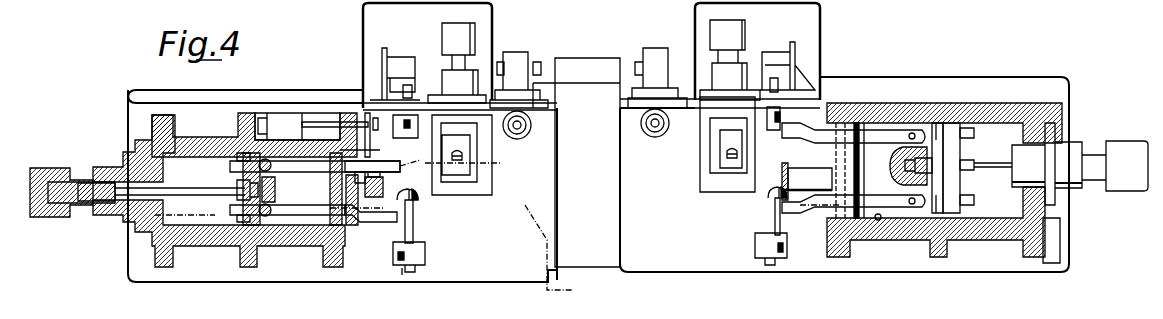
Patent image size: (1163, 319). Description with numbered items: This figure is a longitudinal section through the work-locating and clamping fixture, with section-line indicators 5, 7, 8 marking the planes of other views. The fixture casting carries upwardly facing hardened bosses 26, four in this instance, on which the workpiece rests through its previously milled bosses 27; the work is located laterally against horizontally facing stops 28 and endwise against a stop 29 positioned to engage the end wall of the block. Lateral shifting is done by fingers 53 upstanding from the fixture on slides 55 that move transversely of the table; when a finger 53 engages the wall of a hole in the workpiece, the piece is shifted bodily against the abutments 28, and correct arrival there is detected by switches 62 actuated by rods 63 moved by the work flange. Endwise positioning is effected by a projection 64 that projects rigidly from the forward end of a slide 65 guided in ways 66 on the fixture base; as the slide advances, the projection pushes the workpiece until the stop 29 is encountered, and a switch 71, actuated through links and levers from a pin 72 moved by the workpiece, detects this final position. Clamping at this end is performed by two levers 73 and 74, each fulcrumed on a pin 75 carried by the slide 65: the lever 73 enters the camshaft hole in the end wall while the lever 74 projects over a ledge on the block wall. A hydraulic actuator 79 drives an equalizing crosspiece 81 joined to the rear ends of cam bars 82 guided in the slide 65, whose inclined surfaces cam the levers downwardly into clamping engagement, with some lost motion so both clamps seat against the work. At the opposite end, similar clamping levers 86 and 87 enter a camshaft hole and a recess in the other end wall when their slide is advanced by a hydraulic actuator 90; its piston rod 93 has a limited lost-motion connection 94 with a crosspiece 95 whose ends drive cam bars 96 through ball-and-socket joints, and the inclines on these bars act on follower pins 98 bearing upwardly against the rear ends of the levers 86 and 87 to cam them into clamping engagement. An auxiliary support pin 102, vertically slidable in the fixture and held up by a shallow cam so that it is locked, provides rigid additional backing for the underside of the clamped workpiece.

The section line 5- 5 is at (182, 218).
The section line 7- 7 is at (456, 90).
The section line 8- 8 is at (507, 33).
The hardened bosses 26 is at (426, 257).
The milled bosses 27 is at (397, 256).
The horizontally facing stops 28 is at (402, 275).
The stop 29 is at (385, 183).
The fingers 53 is at (464, 155).
The slides 55 is at (482, 188).
The switches 62 is at (400, 60).
The rods 63 is at (414, 226).
The projection 64 is at (810, 173).
The slide 65 is at (885, 120).
The ways 66 is at (936, 222).
The switch 71 is at (285, 118).
The pin 72 is at (395, 199).
The clamping lever 73 is at (793, 210).
The clamping lever 74 is at (786, 130).
The pin 75 is at (860, 163).
The hydraulic actuator 79 is at (1112, 195).
The crosspiece 81 is at (960, 186).
The cam bars 82 is at (940, 125).
The clamping lever 86 is at (388, 167).
The clamping lever 87 is at (385, 217).
The hydraulic actuator 90 is at (112, 162).
The piston rod 93 is at (121, 205).
The lost motion connection 94 is at (180, 202).
The crosspiece 95 is at (230, 212).
The cam bars 96 is at (300, 197).
The follower pins 98 is at (276, 182).
The pin 102 is at (526, 129).